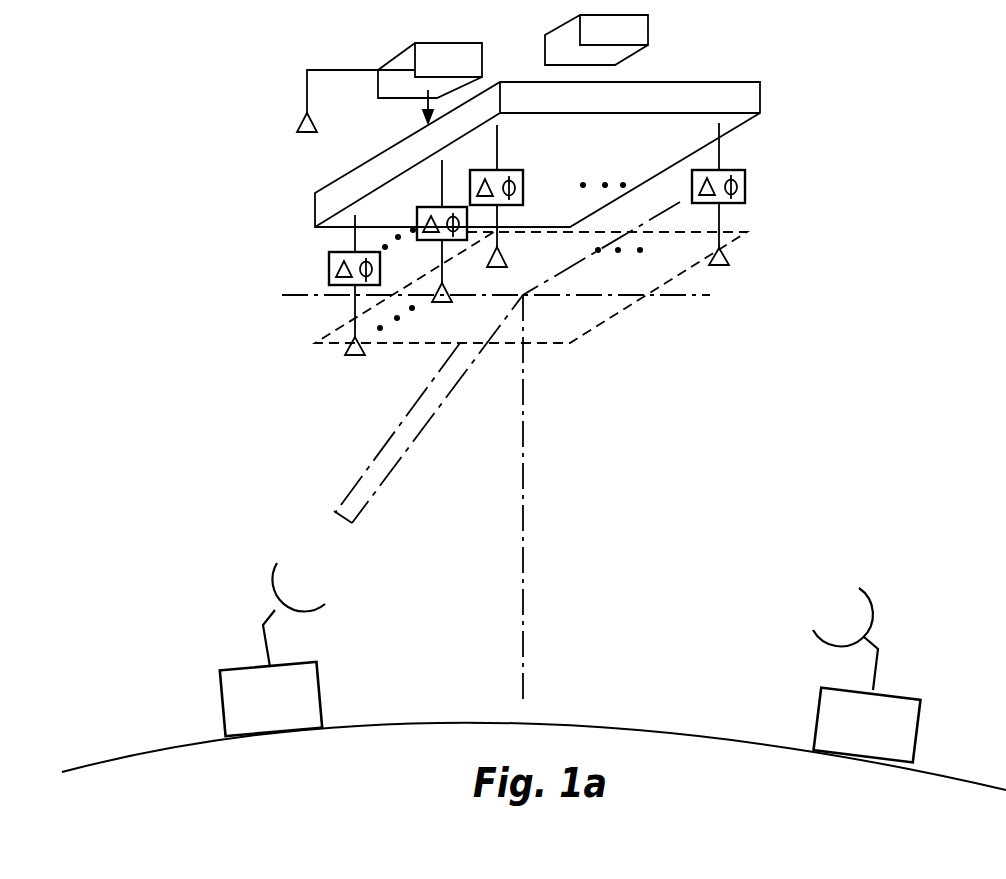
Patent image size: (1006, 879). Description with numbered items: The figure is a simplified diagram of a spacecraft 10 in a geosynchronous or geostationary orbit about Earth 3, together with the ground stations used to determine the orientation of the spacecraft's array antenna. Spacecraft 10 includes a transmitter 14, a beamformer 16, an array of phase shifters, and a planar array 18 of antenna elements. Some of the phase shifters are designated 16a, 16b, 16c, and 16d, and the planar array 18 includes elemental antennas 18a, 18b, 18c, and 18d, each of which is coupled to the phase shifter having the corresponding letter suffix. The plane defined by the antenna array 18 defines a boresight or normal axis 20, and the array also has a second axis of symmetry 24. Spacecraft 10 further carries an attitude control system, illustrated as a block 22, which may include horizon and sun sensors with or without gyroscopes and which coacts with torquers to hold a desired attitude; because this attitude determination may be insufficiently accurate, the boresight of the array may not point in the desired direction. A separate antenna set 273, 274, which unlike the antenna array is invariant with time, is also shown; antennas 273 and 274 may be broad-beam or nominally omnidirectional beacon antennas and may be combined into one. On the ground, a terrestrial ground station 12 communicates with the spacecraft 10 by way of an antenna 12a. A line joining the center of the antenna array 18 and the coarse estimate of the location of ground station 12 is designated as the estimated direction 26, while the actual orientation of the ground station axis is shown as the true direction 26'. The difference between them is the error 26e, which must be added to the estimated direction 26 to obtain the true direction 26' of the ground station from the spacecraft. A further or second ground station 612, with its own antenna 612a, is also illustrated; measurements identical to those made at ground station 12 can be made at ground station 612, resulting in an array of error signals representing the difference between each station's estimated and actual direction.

The spacecraft 10 is at (531, 209).
The transmitter 14 is at (400, 57).
The attitude control system 22 is at (648, 28).
The antenna 273 is at (308, 106).
The antenna 274 is at (298, 131).
The beamformer 16 is at (313, 208).
The phase shifter 16a is at (329, 268).
The phase shifter 16b is at (417, 216).
The phase shifter 16c is at (523, 185).
The phase shifter 16d is at (745, 173).
The planar array of antenna elements 18 is at (760, 238).
The elemental antenna 18a is at (347, 356).
The elemental antenna 18b is at (441, 304).
The elemental antenna 18c is at (512, 258).
The elemental antenna 18d is at (730, 262).
The second axis of symmetry 24 is at (296, 296).
The boresight axis 20 is at (525, 452).
The ground station axis 26 is at (516, 362).
The actual ground station axis 26' is at (397, 428).
The error 26e is at (340, 520).
The Earth 3 is at (648, 731).
The terrestrial ground station 12 is at (219, 704).
The antenna 12a is at (262, 585).
The second ground station 612 is at (916, 730).
The antenna 612a is at (866, 604).